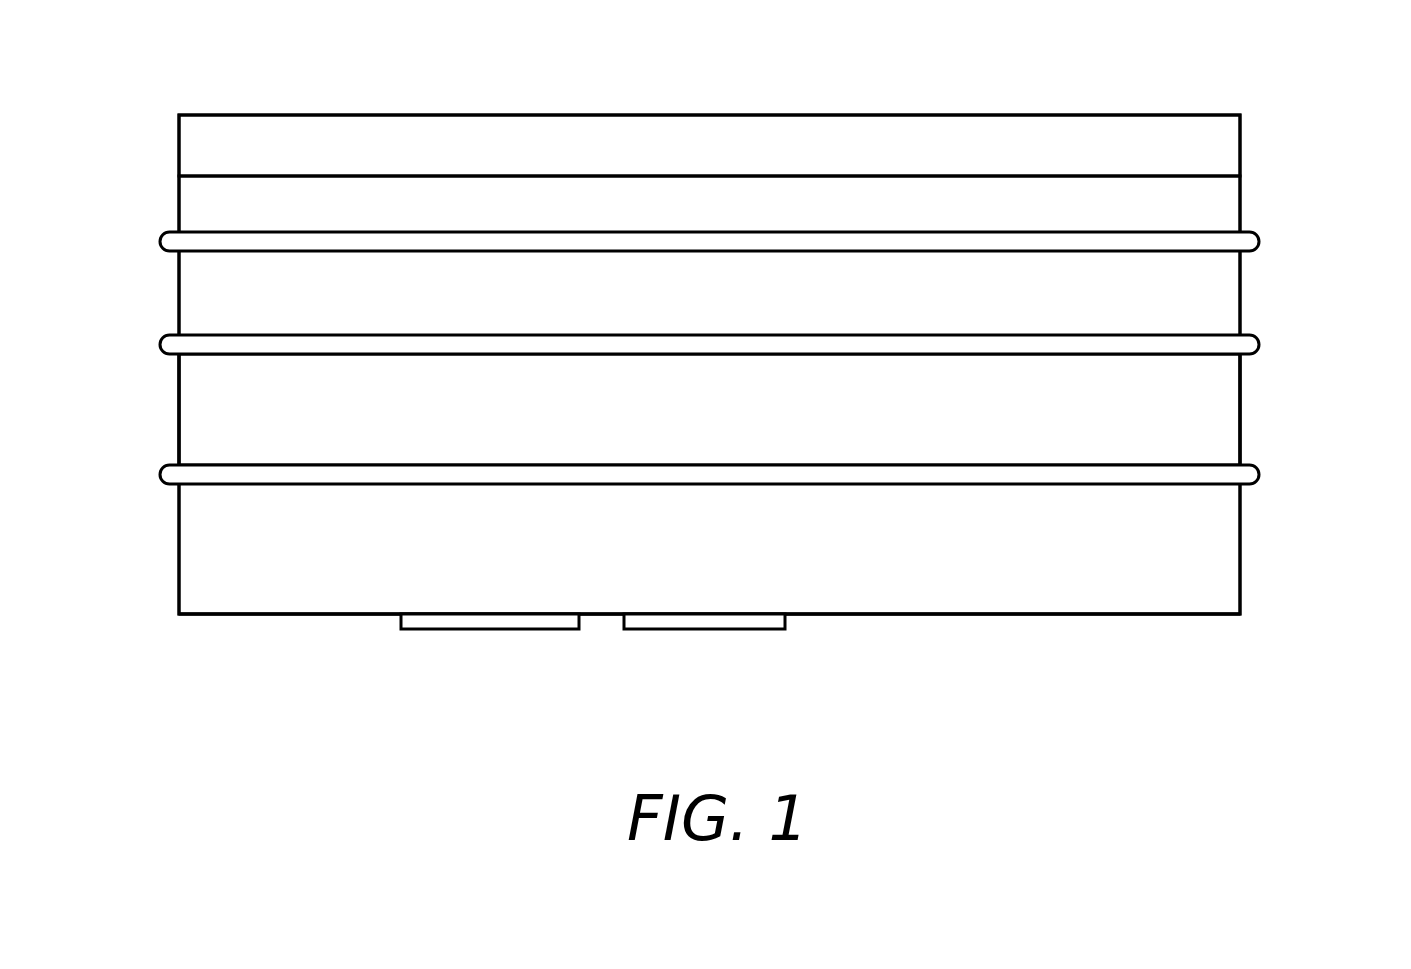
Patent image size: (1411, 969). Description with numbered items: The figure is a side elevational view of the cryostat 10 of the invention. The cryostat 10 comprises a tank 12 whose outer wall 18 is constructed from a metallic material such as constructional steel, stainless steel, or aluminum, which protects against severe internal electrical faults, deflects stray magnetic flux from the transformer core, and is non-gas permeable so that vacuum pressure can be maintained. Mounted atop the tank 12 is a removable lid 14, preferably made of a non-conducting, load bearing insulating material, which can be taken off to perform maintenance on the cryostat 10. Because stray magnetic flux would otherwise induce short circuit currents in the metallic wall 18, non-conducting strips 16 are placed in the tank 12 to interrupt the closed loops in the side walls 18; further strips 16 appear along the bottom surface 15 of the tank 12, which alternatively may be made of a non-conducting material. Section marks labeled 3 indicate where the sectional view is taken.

The multilayer device 10 is at (247, 91).
The body / substrate layer 12 is at (178, 285).
The top layer 14 is at (643, 137).
The bottom surface 15 is at (972, 616).
The electrodes 16 is at (1261, 236).
The central region 18 is at (666, 408).
The section line 3- 3 is at (69, 236).